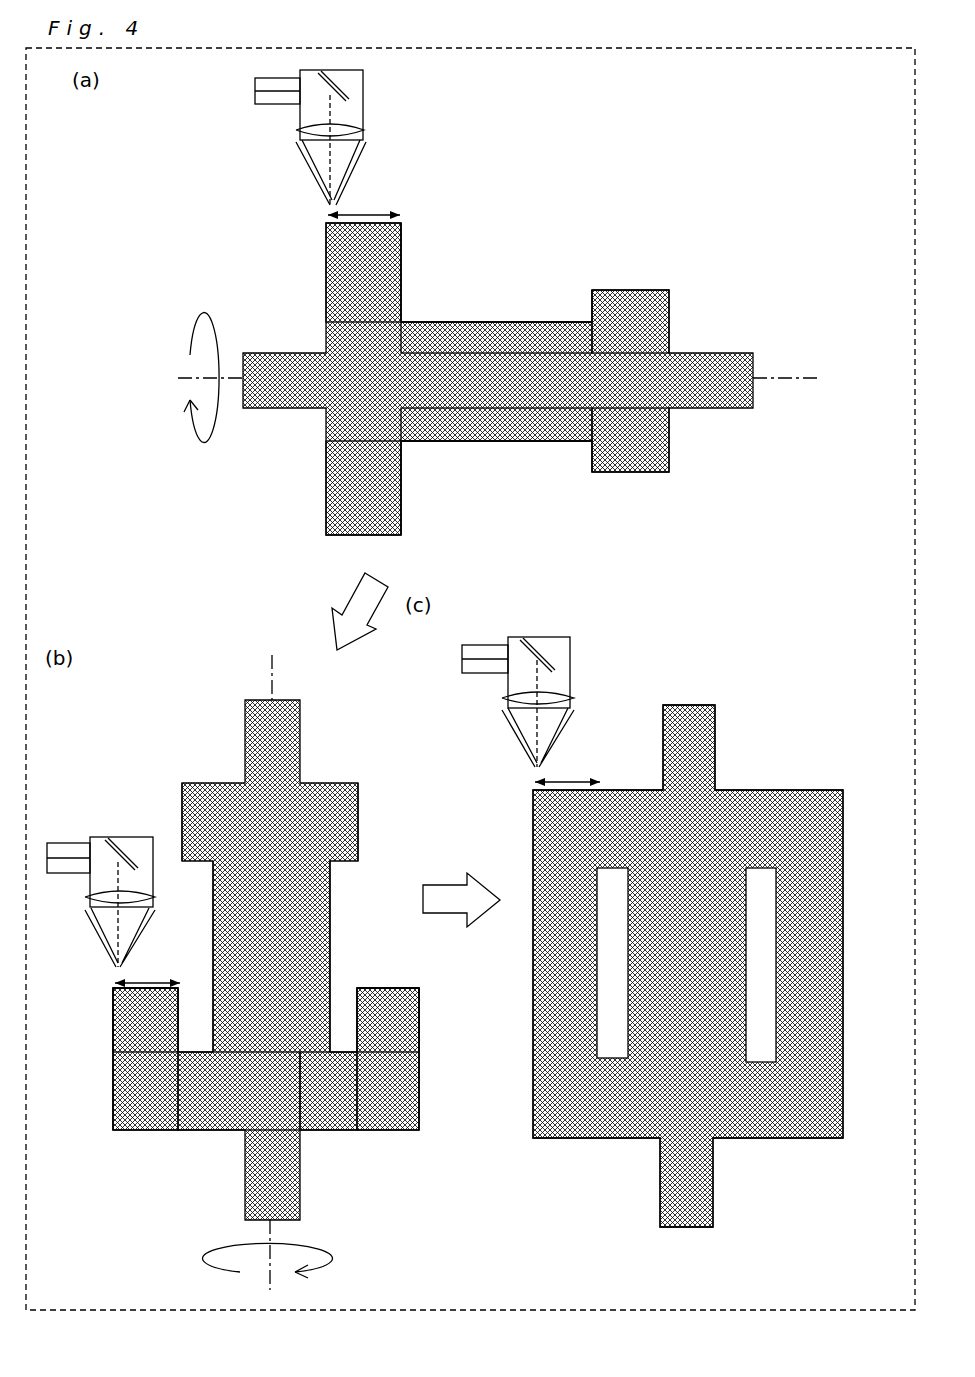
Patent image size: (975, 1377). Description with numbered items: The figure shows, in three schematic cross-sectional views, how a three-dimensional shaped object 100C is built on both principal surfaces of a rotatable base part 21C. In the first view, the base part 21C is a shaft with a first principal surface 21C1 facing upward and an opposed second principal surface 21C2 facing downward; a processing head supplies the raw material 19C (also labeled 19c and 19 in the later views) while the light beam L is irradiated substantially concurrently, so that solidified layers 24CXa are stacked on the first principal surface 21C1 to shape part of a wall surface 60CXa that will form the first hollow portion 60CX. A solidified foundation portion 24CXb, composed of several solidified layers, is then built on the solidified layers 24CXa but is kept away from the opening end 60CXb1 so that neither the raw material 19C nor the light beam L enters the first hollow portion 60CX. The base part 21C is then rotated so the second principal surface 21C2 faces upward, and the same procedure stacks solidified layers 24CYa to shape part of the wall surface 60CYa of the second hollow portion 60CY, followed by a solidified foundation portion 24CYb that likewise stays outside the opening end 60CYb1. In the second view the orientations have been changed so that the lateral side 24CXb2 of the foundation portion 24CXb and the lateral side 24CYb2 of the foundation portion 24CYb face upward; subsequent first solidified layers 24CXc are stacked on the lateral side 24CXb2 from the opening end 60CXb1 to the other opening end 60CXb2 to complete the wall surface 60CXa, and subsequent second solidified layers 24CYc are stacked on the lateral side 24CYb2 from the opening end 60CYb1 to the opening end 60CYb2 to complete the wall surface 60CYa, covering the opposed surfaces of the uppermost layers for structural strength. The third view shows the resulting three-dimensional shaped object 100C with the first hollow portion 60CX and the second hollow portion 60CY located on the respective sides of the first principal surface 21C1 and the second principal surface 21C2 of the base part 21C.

The base part 21C is at (733, 383).
The three-dimensional shaped object 100C is at (813, 737).
The raw material 19c is at (327, 205).
The raw material 19C is at (112, 971).
The laser processing head 19 is at (532, 770).
The light beam L is at (322, 190).
The first principal surface 21C1 is at (513, 320).
The second principal surface 21C2 is at (523, 412).
The solidified layers 24CXa is at (662, 330).
The solidified foundation portion 24CXb is at (406, 300).
The lateral side of solidified foundation portion 24CXb2 is at (114, 1092).
The subsequent first solidified layers 24CXc is at (135, 1060).
The solidified layers 24CYa is at (638, 452).
The solidified foundation portion 24CYb is at (406, 470).
The lateral side of solidified foundation portion 24CYb2 is at (418, 1082).
The subsequent second solidified layers 24CYc is at (421, 1012).
The wall surface 60CXa is at (592, 307).
The opening end 60CXb1 is at (405, 300).
The opening end 60CXb2 is at (596, 290).
The wall surface 60CYa is at (592, 458).
The opening end 60CYb1 is at (405, 453).
The opening end 60CYb2 is at (592, 470).
The first hollow portion 60CX is at (607, 883).
The second hollow portion 60CY is at (762, 912).